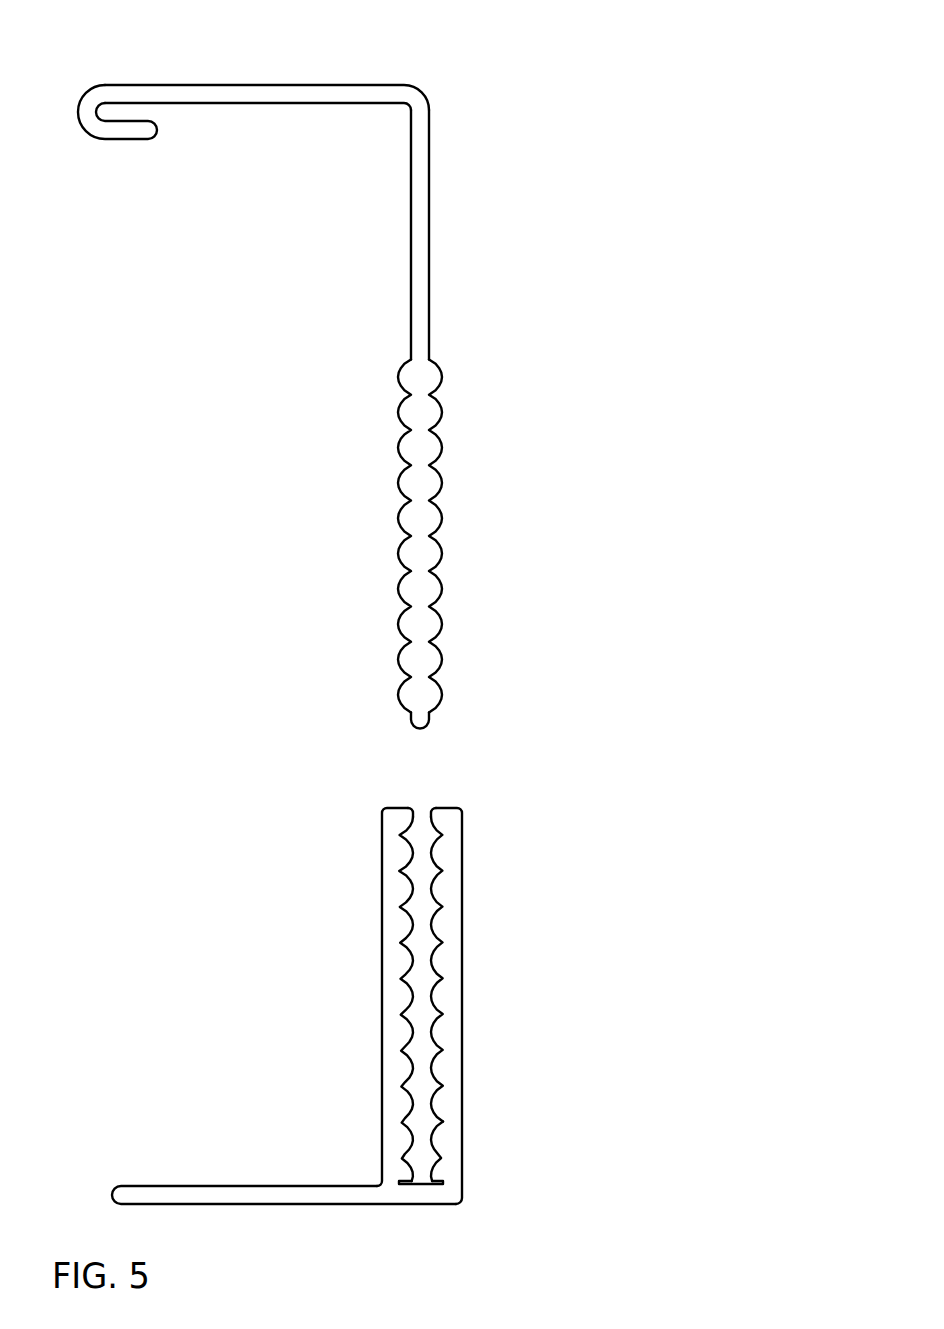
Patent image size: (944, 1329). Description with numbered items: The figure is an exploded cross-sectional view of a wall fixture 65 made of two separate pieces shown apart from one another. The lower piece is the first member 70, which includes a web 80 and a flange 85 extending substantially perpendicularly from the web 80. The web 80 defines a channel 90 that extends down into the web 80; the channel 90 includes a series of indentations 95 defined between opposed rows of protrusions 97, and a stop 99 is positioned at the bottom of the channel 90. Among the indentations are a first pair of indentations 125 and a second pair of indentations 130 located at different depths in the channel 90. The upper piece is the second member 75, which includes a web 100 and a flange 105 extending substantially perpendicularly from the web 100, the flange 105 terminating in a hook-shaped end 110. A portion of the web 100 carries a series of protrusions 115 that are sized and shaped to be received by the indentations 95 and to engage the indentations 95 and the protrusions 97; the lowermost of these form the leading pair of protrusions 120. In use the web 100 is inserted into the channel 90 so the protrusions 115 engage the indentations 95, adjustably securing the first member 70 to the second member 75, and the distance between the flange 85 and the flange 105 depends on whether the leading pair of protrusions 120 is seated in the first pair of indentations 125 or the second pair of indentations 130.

The wall fixture 65 is at (466, 76).
The flange 105 is at (253, 81).
The hook-shaped end 110 is at (118, 143).
The web 100 is at (422, 203).
The second member 75 is at (533, 307).
The protrusions 115 is at (435, 518).
The leading pair of protrusions 120 is at (435, 700).
The first member 70 is at (534, 977).
The flange 85 is at (218, 1186).
The indentations 95 is at (399, 870).
The channel 90 is at (427, 807).
The protrusions 97 is at (412, 856).
The stop 99 is at (425, 1185).
The first pair of indentations 125 is at (438, 1159).
The second pair of indentations 130 is at (438, 1087).
The web 80 is at (463, 856).